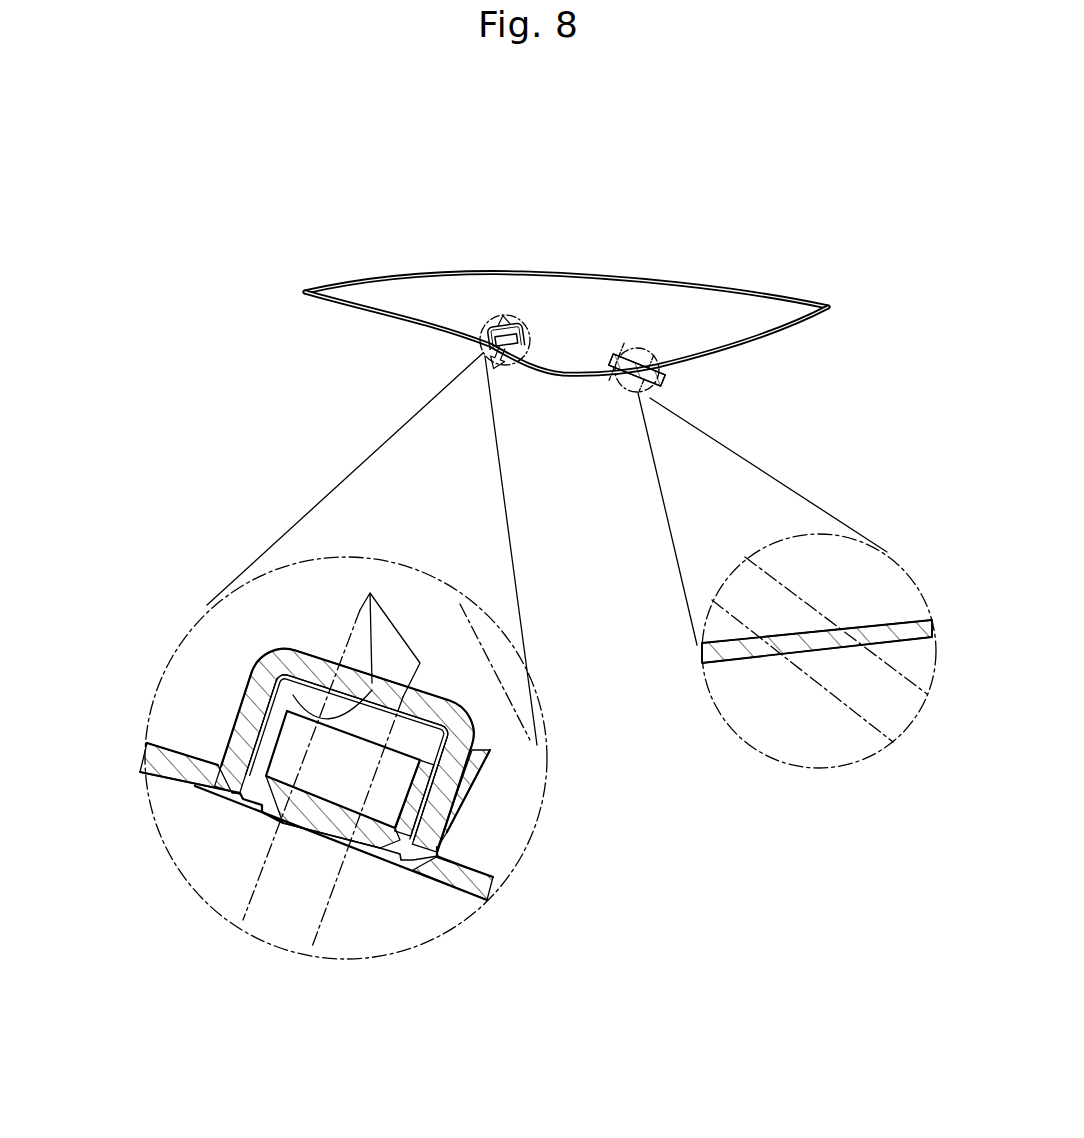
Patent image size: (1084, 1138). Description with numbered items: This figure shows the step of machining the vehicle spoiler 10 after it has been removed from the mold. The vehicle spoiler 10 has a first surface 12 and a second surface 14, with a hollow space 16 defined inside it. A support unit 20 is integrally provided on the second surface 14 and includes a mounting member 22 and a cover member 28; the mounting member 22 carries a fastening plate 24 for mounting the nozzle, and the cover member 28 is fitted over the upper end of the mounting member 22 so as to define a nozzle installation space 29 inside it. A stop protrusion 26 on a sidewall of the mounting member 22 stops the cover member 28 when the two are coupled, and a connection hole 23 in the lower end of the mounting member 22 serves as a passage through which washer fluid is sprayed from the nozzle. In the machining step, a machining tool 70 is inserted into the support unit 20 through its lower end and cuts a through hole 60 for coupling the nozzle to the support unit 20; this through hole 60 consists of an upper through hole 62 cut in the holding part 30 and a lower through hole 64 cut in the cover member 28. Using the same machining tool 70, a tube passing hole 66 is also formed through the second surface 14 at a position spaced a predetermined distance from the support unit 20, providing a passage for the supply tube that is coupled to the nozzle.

The vehicle spoiler 10 is at (482, 495).
The first surface 12 is at (404, 275).
The second surface 14 is at (381, 318).
The hollow space 16 is at (655, 321).
The support unit 20 is at (72, 632).
The mounting member 22 is at (222, 758).
The connection hole 23 is at (322, 822).
The fastening plate 24 is at (443, 857).
The stop protrusion 26 is at (450, 828).
The cover member 28 is at (263, 750).
The nozzle installation space 29 is at (423, 777).
The holding part 30 is at (445, 717).
The through hole 60 is at (135, 562).
The upper through hole 62 is at (372, 683).
The lower through hole 64 is at (262, 680).
The tube passing hole 66 is at (810, 655).
The machining tool 70 is at (390, 633).